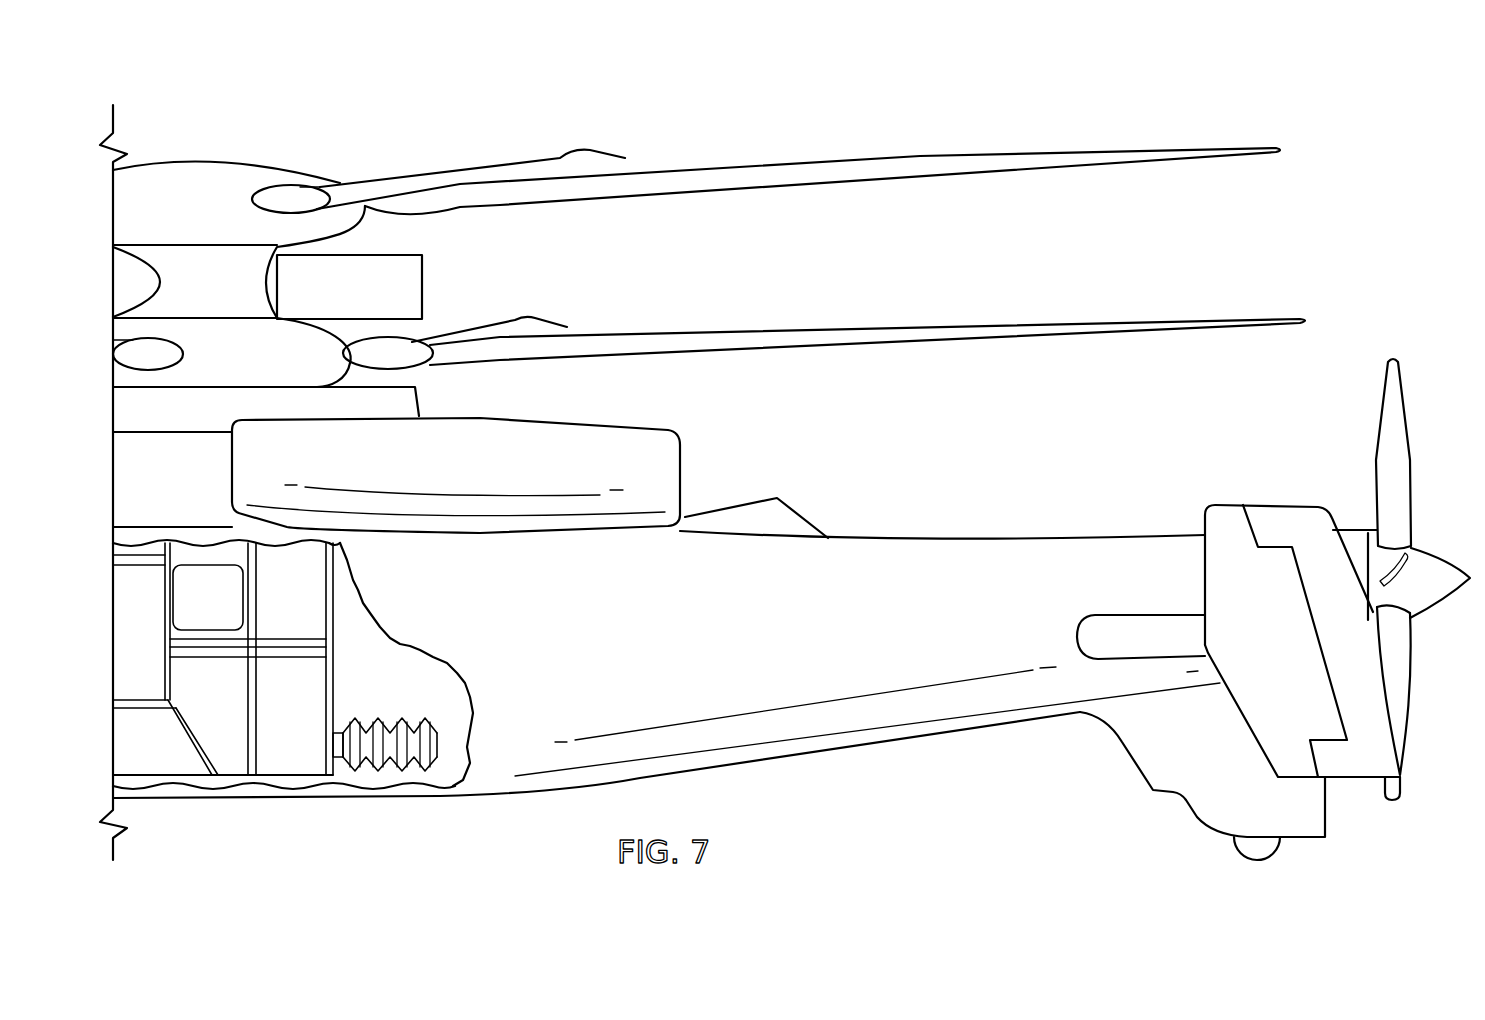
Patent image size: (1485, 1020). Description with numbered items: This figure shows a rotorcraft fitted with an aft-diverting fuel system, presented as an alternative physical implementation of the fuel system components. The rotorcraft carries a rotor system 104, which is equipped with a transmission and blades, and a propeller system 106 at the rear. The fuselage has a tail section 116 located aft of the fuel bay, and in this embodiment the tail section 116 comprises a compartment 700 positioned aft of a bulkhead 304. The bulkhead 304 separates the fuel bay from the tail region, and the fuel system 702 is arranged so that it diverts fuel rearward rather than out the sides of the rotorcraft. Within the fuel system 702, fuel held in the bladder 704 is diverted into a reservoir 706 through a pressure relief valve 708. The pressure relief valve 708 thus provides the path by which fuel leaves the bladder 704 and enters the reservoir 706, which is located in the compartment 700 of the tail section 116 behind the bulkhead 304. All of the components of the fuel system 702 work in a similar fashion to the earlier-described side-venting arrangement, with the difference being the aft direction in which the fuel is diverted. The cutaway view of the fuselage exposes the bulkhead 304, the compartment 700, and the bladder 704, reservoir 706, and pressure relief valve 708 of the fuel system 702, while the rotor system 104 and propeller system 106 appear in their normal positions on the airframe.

The rotor system 104 is at (420, 128).
The propeller system 106 is at (1423, 383).
The tail section 116 is at (853, 745).
The bulkhead 304 is at (337, 648).
The compartment 700 is at (443, 702).
The fuel system 702 is at (277, 630).
The bladder 704 is at (311, 721).
The reservoir 706 is at (393, 768).
The pressure relief valve 708 is at (335, 731).